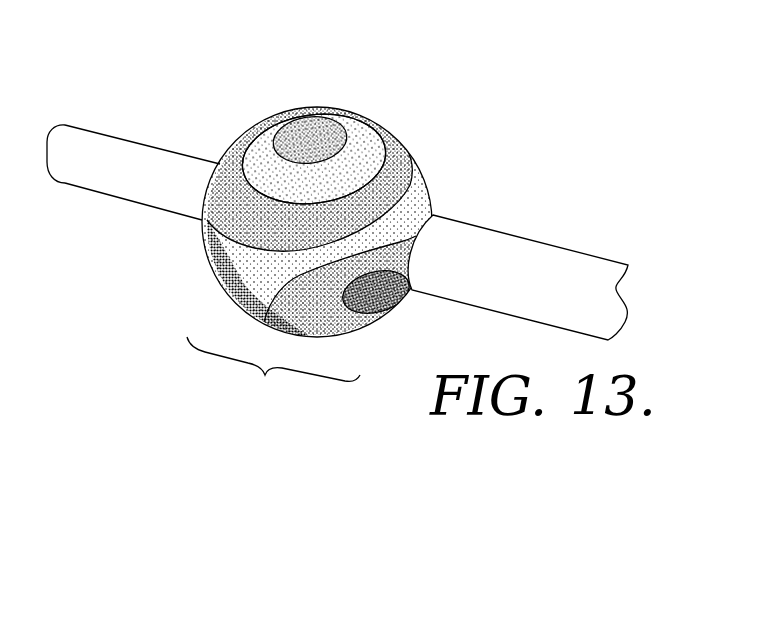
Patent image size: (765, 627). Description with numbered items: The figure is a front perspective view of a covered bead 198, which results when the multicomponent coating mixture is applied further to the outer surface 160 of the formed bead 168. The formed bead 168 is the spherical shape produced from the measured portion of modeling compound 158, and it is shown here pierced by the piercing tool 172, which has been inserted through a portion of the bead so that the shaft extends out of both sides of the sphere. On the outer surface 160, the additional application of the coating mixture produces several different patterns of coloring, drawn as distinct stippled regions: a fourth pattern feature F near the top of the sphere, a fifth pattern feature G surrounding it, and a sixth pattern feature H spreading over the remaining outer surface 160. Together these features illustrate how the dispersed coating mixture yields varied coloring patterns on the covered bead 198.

The covered bead 198 is at (344, 175).
The measured portion of modeling compound 158 is at (301, 199).
The outer surface 160 is at (207, 273).
The formed bead 168 is at (262, 374).
The piercing tool 172 is at (578, 260).
The fourth pattern feature F is at (312, 111).
The fifth pattern feature G is at (263, 118).
The sixth pattern feature H is at (227, 146).